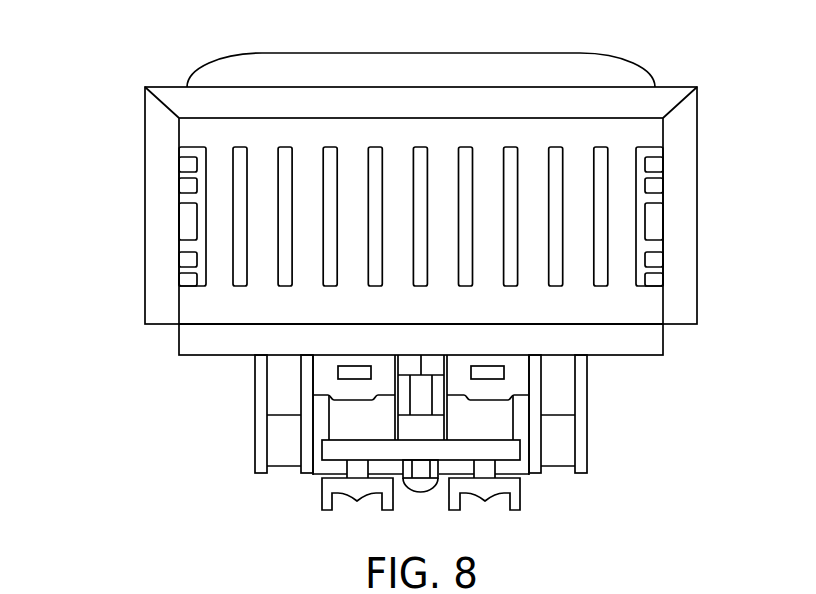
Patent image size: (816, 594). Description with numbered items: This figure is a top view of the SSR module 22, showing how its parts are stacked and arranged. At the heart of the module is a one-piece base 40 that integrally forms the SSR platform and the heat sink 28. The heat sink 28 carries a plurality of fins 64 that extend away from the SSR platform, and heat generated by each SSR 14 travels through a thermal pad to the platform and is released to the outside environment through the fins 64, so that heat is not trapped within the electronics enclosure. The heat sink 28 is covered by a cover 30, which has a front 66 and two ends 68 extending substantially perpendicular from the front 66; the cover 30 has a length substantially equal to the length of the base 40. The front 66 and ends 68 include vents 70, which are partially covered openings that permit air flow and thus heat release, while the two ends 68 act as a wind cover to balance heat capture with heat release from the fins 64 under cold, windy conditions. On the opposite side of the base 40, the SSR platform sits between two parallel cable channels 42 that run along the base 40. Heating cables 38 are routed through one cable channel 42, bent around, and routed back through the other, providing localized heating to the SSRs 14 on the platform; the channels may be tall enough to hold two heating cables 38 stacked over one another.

The SSR module 22 is at (122, 48).
The cover 30 is at (673, 87).
The vents 70 is at (618, 60).
The front 66 is at (322, 105).
The fins 64 is at (425, 148).
The ends 68 is at (155, 190).
The heat sink 28 is at (265, 172).
The base 40 is at (627, 326).
The heating cables 38 is at (278, 435).
The SSRs 14 is at (500, 428).
The cable channels 42 is at (283, 477).